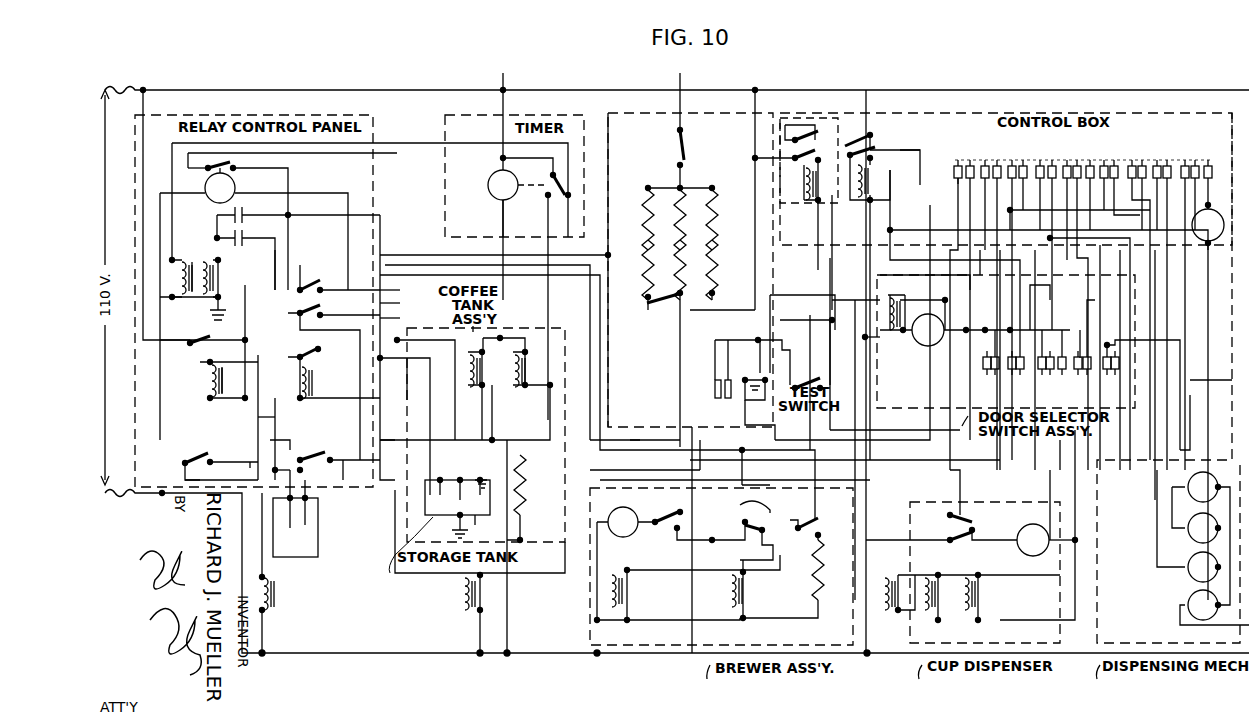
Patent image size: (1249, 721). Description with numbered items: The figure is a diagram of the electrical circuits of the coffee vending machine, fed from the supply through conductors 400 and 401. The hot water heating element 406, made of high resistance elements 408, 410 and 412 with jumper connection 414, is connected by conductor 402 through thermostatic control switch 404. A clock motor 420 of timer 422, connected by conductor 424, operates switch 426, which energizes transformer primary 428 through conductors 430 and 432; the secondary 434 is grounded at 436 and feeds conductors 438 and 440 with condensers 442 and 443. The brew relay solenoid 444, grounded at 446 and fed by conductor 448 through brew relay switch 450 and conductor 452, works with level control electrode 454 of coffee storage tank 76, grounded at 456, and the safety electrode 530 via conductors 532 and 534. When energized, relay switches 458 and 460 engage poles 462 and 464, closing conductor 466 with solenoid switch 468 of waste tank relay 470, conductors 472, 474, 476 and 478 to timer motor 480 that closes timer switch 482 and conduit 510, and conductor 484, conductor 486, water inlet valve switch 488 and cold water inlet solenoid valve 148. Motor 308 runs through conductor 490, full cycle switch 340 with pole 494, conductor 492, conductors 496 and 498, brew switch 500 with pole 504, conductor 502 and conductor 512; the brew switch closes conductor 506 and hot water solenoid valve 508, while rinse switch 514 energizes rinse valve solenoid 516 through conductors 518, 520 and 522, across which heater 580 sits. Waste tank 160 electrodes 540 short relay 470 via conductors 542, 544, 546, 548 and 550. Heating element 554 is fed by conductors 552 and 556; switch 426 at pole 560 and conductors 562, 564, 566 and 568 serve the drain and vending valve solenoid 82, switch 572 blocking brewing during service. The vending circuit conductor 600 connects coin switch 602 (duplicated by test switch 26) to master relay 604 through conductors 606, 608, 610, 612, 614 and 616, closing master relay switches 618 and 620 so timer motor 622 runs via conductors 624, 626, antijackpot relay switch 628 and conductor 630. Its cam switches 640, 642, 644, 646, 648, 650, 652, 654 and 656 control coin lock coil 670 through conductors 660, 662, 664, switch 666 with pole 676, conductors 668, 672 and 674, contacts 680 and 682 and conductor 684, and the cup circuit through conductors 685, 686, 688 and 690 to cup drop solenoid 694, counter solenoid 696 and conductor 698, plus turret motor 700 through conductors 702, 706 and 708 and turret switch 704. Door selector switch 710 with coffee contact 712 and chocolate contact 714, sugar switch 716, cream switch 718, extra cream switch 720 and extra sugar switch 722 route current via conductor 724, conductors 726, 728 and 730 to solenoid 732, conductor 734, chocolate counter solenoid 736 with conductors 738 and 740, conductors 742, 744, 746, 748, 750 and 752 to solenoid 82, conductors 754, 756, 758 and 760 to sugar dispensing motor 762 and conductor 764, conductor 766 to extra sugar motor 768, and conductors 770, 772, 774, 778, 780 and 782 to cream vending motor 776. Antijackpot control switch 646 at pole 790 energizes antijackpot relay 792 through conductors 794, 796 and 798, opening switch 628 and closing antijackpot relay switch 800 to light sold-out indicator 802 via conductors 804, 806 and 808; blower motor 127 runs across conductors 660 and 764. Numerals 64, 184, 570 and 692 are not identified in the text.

The test switch 26 is at (806, 380).
The control box terminal 64 is at (1129, 148).
The coffee storage tank 76 is at (478, 525).
The vending valve solenoid 82 is at (470, 367).
The blower motor 127 is at (1204, 605).
The cold water inlet solenoid valve 148 is at (278, 594).
The waste tank 160 is at (315, 553).
The coffee tank solenoid 184 is at (517, 374).
The brewing assembly motor 308 is at (626, 522).
The full cycle switch 340 is at (673, 520).
The conductor 400 is at (160, 90).
The conductor 401 is at (876, 672).
The conductor 402 is at (680, 164).
The thermostatic control switch 404 is at (687, 144).
The heating element 406 is at (660, 188).
The high resistance element 408 is at (644, 238).
The high resistance element 410 is at (682, 190).
The high resistance element 412 is at (714, 192).
The jumper connection 414 is at (658, 302).
The clock motor 420 is at (487, 178).
The timer 422 is at (533, 115).
The conductor 424 is at (500, 224).
The timer switch 426 is at (550, 186).
The transformer primary 428 is at (184, 299).
The conductor 430 is at (405, 146).
The conductor 432 is at (162, 415).
The transformer secondary 434 is at (215, 269).
The ground 436 is at (213, 322).
The conductor 438 is at (288, 215).
The conductor 440 is at (277, 363).
The condenser 442 is at (238, 214).
The condenser 443 is at (243, 238).
The brew relay solenoid 444 is at (314, 378).
The ground 446 is at (473, 497).
The conductor 448 is at (288, 236).
The brew relay switch 450 is at (319, 352).
The conductor 452 is at (453, 353).
The level control electrode 454 is at (457, 497).
The ground 456 is at (448, 534).
The relay switch 458 is at (313, 312).
The relay switch 460 is at (306, 267).
The switch pole 462 is at (316, 322).
The switch pole 464 is at (314, 283).
The conductor 466 is at (146, 148).
The solenoid switch 468 is at (194, 349).
The waste tank relay 470 is at (202, 392).
The conductor 472 is at (242, 294).
The conductor 474 is at (400, 292).
The conductor 476 is at (326, 191).
The conductor 478 is at (160, 297).
The timer motor 480 is at (235, 184).
The timer switch 482 is at (234, 164).
The conductor 484 is at (399, 320).
The conductor 486 is at (258, 355).
The water inlet valve switch 488 is at (204, 456).
The conductor 490 is at (682, 481).
The conductor 492 is at (620, 545).
The pole 494 is at (677, 529).
The conductor 496 is at (608, 352).
The conductor 498 is at (745, 480).
The brew switch 500 is at (758, 522).
The conductor 502 is at (750, 543).
The pole 504 is at (762, 513).
The conductor 506 is at (670, 560).
The hot water solenoid valve 508 is at (633, 589).
The conduit 510 is at (288, 182).
The conductor 512 is at (648, 444).
The rinse switch 514 is at (813, 523).
The rinse valve solenoid 516 is at (728, 589).
The conductor 518 is at (780, 458).
The conductor 520 is at (767, 566).
The conductor 522 is at (690, 627).
The safety electrode 530 is at (422, 488).
The conductor 532 is at (387, 302).
The conductor 534 is at (438, 394).
The electrodes 540 is at (305, 524).
The conductor 542 is at (246, 398).
The conductor 544 is at (206, 335).
The conductor 546 is at (262, 417).
The conductor 548 is at (308, 499).
The conductor 550 is at (315, 400).
The conductor 552 is at (556, 228).
The heating element 554 is at (524, 523).
The conductor 556 is at (507, 596).
The service switch 560 is at (264, 466).
The pole 562 is at (297, 445).
The pole 564 is at (197, 475).
The conductor 566 is at (326, 446).
The pole 568 is at (272, 477).
The lead 570 is at (411, 470).
The switch 572 is at (317, 464).
The heater 580 is at (812, 598).
The conductor 600 is at (1092, 90).
The coin switch 602 is at (727, 380).
The master relay 604 is at (889, 170).
The conductor 606 is at (756, 266).
The conductor 608 is at (740, 346).
The conductor 610 is at (809, 326).
The conductor 612 is at (830, 285).
The conductor 614 is at (896, 182).
The conductor 616 is at (887, 488).
The master relay switch 618 is at (855, 136).
The master relay switch 620 is at (870, 155).
The timer motor 622 is at (1208, 247).
The conductor 624 is at (1107, 244).
The conductor 626 is at (1207, 275).
The antijackpot relay switch 628 is at (802, 126).
The conductor 630 is at (717, 213).
The timer motor cycle switch and coin lock control switch 640 is at (1199, 298).
The cup vending switch 642 is at (1148, 293).
The master relay control switch 644 is at (1117, 185).
The antijackpot control switch 646 is at (1098, 298).
The chocolate control switch 648 is at (1066, 231).
The extra cream switch 650 is at (1047, 187).
The cream switch 652 is at (1019, 294).
The sugar switch 654 is at (994, 306).
The coffee vending switch 656 is at (960, 157).
The conductor 660 is at (1248, 440).
The conductor 662 is at (1245, 195).
The conductor 664 is at (1210, 287).
The switch 666 is at (978, 508).
The conductor 668 is at (882, 466).
The coin lock coil 670 is at (755, 400).
The conductor 672 is at (769, 342).
The conductor 674 is at (820, 294).
The pole 676 is at (986, 498).
The contact 680 is at (1181, 306).
The contact 682 is at (1214, 163).
The conductor 684 is at (1207, 178).
The conductor 685 is at (1168, 162).
The conductor 686 is at (1125, 210).
The conductor 688 is at (1208, 258).
The conductor 690 is at (1058, 463).
The cup dispenser solenoid 692 is at (892, 620).
The cup drop solenoid 694 is at (935, 620).
The counter solenoid 696 is at (985, 620).
The conductor 698 is at (1058, 453).
The turret motor 700 is at (1039, 525).
The conductor 702 is at (831, 452).
The turret switch 704 is at (958, 538).
The conductor 706 is at (977, 540).
The conductor 708 is at (1051, 499).
The door selector switch 710 is at (1062, 392).
The coffee contact 712 is at (1048, 360).
The chocolate contact 714 is at (1058, 382).
The sugar switch 716 is at (1008, 358).
The cream switch 718 is at (979, 360).
The extra cream switch 720 is at (1094, 395).
The extra sugar switch 722 is at (1113, 360).
The conductor 724 is at (1046, 320).
The conductor 726 is at (960, 278).
The conductor 728 is at (1045, 300).
The conductor 730 is at (880, 473).
The solenoid 732 is at (463, 596).
The conductor 734 is at (400, 574).
The chocolate counter solenoid 736 is at (900, 302).
The conductor 738 is at (911, 304).
The conductor 740 is at (882, 340).
The conductor 742 is at (1074, 390).
The conductor 744 is at (960, 335).
The conductor 746 is at (952, 160).
The conductor 748 is at (782, 442).
The conductor 750 is at (495, 402).
The conductor 752 is at (500, 338).
The conductor 754 is at (1028, 370).
The conductor 756 is at (1035, 396).
The conductor 758 is at (1106, 320).
The conductor 760 is at (1156, 481).
The sugar dispensing motor 762 is at (1204, 567).
The conductor 764 is at (1218, 636).
The conductor 766 is at (1207, 395).
The extra sugar motor 768 is at (1204, 487).
The conductor 770 is at (996, 373).
The conductor 772 is at (972, 294).
The conductor 774 is at (1168, 322).
The cream vending motor 776 is at (1204, 528).
The conductor 778 is at (1038, 170).
The conductor 780 is at (1070, 244).
The conductor 782 is at (1095, 305).
The switch pole 790 is at (1084, 202).
The antijackpot relay 792 is at (792, 198).
The conductor 794 is at (1137, 210).
The conductor 796 is at (1092, 212).
The conductor 798 is at (834, 226).
The antijackpot relay switch 800 is at (811, 156).
The sold-out indicator 802 is at (975, 330).
The conductor 804 is at (758, 158).
The conductor 806 is at (828, 258).
The conductor 808 is at (948, 318).